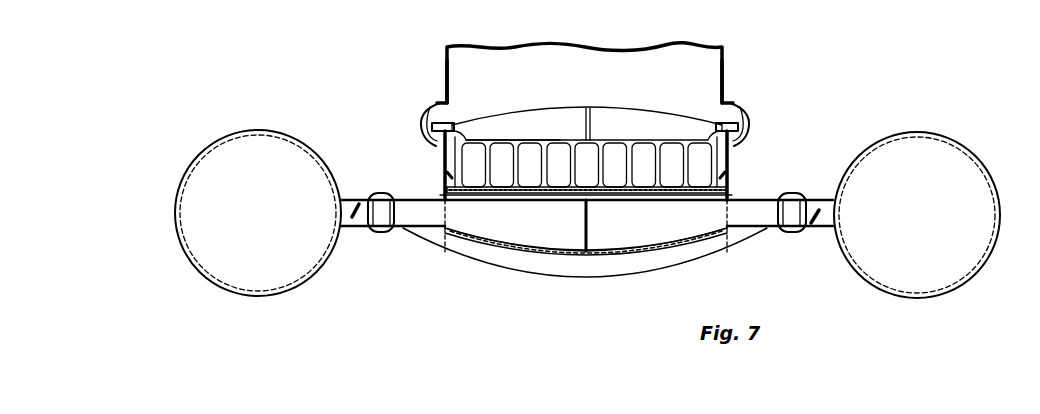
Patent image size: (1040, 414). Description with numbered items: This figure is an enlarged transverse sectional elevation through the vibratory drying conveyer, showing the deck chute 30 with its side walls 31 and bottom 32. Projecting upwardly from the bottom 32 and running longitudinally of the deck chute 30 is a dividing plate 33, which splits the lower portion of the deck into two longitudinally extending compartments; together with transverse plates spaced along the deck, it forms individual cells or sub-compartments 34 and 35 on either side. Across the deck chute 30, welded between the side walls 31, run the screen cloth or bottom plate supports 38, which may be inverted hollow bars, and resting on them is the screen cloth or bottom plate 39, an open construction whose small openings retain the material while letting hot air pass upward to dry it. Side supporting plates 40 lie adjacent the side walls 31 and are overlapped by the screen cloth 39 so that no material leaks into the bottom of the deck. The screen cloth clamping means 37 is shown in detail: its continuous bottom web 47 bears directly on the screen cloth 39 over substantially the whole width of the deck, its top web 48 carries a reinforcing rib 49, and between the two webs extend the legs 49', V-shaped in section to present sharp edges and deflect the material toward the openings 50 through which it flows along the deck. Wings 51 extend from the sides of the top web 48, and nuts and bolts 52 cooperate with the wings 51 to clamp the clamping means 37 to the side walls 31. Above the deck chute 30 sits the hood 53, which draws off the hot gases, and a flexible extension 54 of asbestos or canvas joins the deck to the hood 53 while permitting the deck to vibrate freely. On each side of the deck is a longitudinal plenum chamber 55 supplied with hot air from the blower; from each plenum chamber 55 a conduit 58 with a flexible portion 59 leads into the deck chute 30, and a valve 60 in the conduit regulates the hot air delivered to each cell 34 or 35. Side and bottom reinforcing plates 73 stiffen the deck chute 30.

The deck chute 30 is at (446, 183).
The side walls 31 is at (444, 165).
The bottom 32 is at (548, 251).
The dividing plate 33 is at (588, 213).
The cell or sub-compartment 34 is at (507, 223).
The cell or sub-compartment 35 is at (677, 223).
The screen cloth clamping means 37 is at (544, 141).
The screen cloth or bottom plate supports 38 is at (546, 197).
The screen cloth or bottom plate 39 is at (684, 197).
The side supporting plates 40 is at (444, 188).
The bottom web 47 is at (622, 142).
The top web 48 is at (608, 140).
The reinforcing rib 49 is at (587, 89).
The legs 49' is at (513, 114).
The openings 50 is at (651, 141).
The wings 51 is at (450, 128).
The nuts and bolts 52 is at (438, 101).
The hood 53 is at (498, 57).
The flexible extension 54 is at (426, 120).
The plenum chambers 55 is at (192, 257).
The conduits 58 is at (364, 228).
The flexible portion 59 is at (386, 233).
The valve 60 is at (356, 203).
The reinforcing plates 73 is at (447, 174).